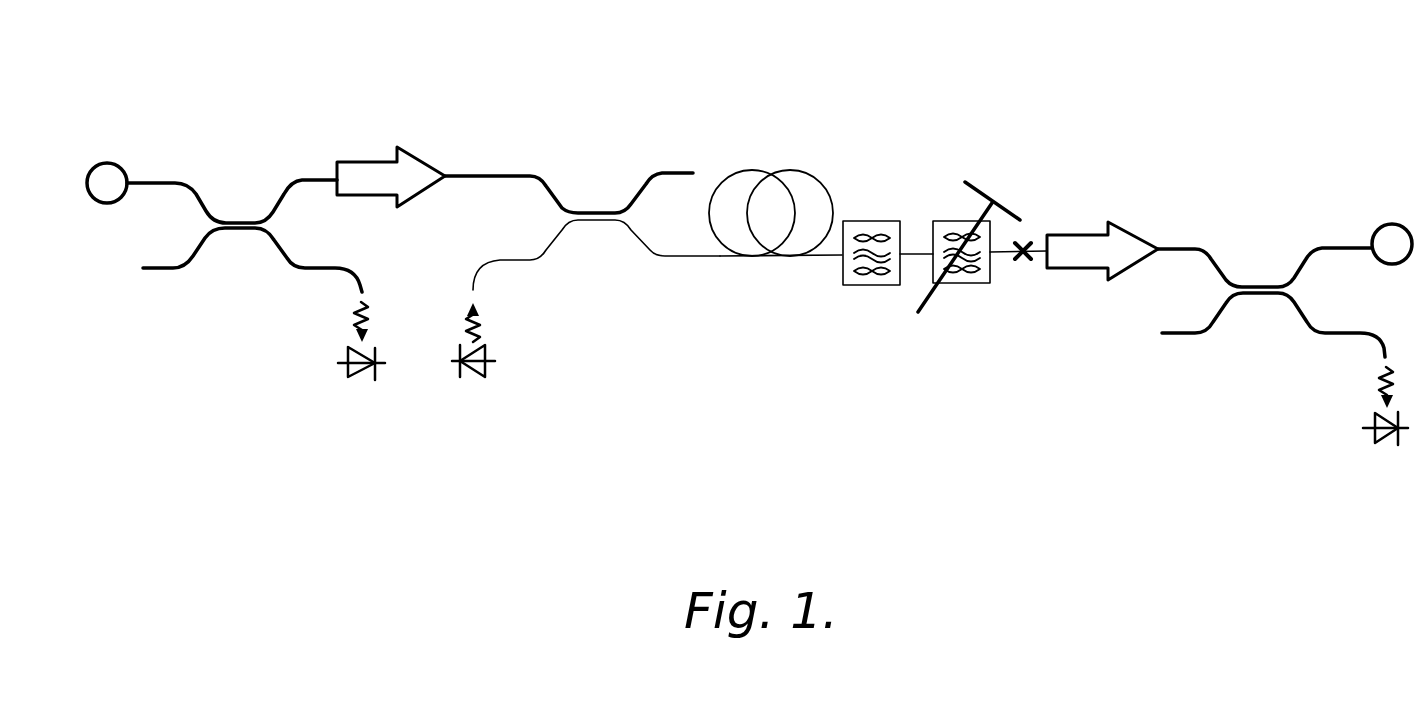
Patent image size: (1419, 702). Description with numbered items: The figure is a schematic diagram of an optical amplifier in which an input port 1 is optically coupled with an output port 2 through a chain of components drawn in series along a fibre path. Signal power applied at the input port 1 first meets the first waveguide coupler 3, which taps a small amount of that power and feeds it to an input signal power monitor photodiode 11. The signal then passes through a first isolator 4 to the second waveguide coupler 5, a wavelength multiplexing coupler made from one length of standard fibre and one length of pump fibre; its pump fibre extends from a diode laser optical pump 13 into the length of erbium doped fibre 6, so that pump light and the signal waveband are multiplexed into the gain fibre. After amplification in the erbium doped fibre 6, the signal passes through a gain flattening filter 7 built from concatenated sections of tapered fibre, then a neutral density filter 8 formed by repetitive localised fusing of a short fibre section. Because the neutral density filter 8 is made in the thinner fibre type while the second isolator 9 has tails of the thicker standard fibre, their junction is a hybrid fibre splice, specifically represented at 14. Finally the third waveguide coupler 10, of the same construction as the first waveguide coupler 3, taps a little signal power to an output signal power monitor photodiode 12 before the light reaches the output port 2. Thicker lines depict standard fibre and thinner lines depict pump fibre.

The input port 1 is at (107, 177).
The output port 2 is at (1393, 237).
The first waveguide coupler 3 is at (228, 233).
The first isolator 4 is at (405, 173).
The second waveguide coupler 5 is at (596, 230).
The erbium doped fibre 6 is at (792, 168).
The gain flattening filter 7 is at (853, 277).
The neutral density filter 8 is at (962, 230).
The second isolator 9 is at (1115, 247).
The third waveguide coupler 10 is at (1250, 310).
The input signal power monitor photodiode 11 is at (350, 378).
The output signal power monitor photodiode 12 is at (1377, 442).
The diode laser optical pump 13 is at (483, 377).
The hybrid fibre splice 14 is at (1028, 262).